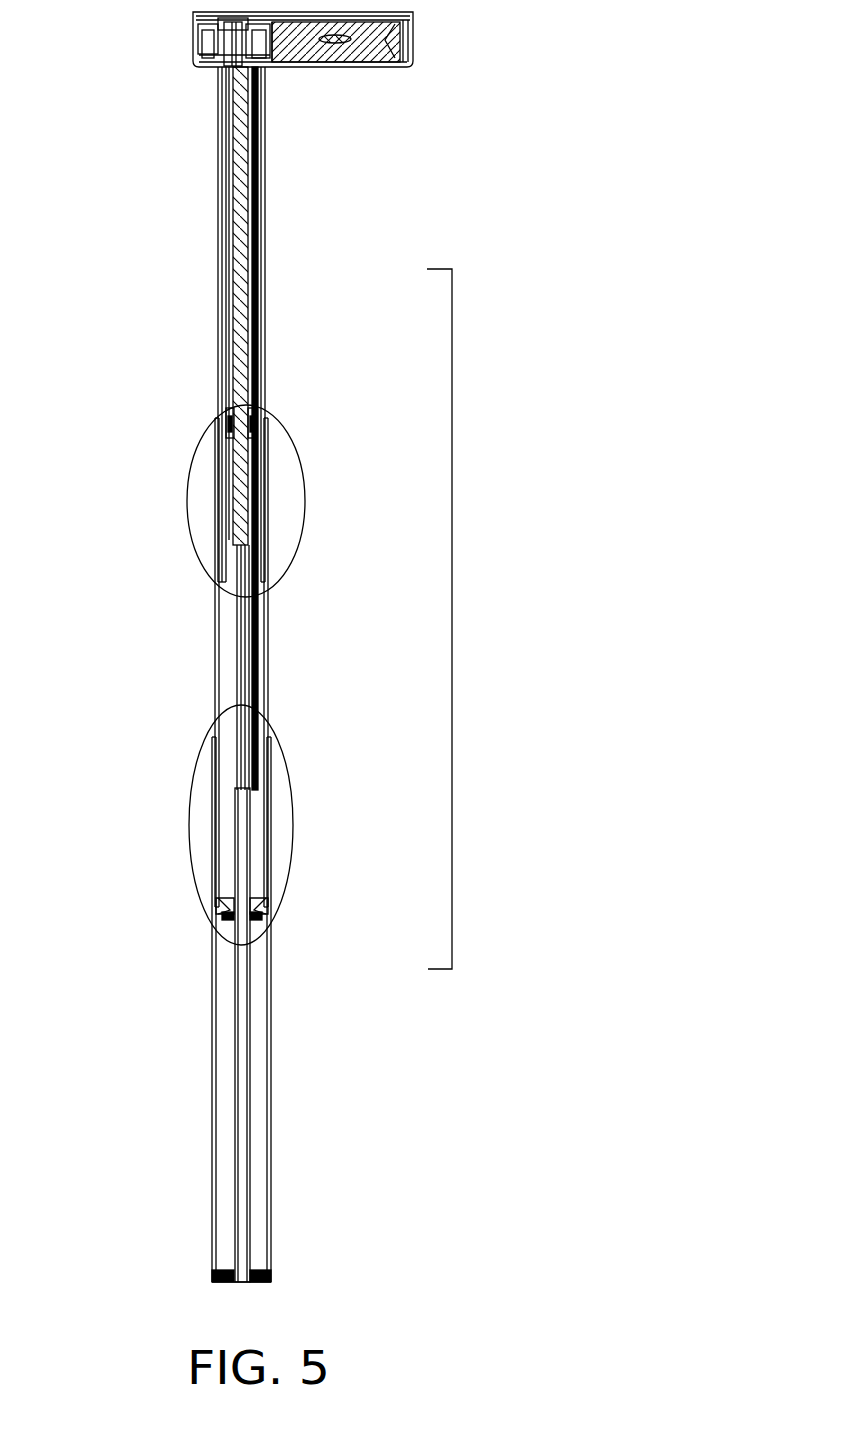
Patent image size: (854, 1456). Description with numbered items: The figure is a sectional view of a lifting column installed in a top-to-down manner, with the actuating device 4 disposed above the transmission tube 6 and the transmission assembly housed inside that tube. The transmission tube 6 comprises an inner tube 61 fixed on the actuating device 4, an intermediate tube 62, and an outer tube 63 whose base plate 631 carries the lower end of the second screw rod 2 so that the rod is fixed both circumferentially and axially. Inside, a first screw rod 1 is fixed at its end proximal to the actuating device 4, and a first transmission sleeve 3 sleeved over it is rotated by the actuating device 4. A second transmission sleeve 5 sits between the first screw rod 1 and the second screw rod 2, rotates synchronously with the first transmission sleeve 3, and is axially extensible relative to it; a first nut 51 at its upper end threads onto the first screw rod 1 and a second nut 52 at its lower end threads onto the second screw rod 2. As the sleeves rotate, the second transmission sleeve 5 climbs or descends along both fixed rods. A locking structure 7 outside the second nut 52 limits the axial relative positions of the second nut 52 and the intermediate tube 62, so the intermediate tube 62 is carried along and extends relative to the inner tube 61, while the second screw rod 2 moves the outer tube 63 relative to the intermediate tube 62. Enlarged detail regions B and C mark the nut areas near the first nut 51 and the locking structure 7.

The first screw rod 1 is at (240, 157).
The second screw rod 2 is at (232, 1157).
The first transmission sleeve 3 is at (228, 98).
The actuating device 4 is at (398, 33).
The second transmission sleeve 5 is at (232, 693).
The first nut 51 is at (228, 420).
The second nut 52 is at (228, 917).
The transmission tube 6 is at (458, 619).
The inner tube 61 is at (265, 284).
The intermediate tube 62 is at (266, 641).
The outer tube 63 is at (270, 997).
The base plate 631 is at (270, 1273).
The locking structure 7 is at (222, 905).
The detail region B is at (188, 487).
The detail region C is at (190, 835).